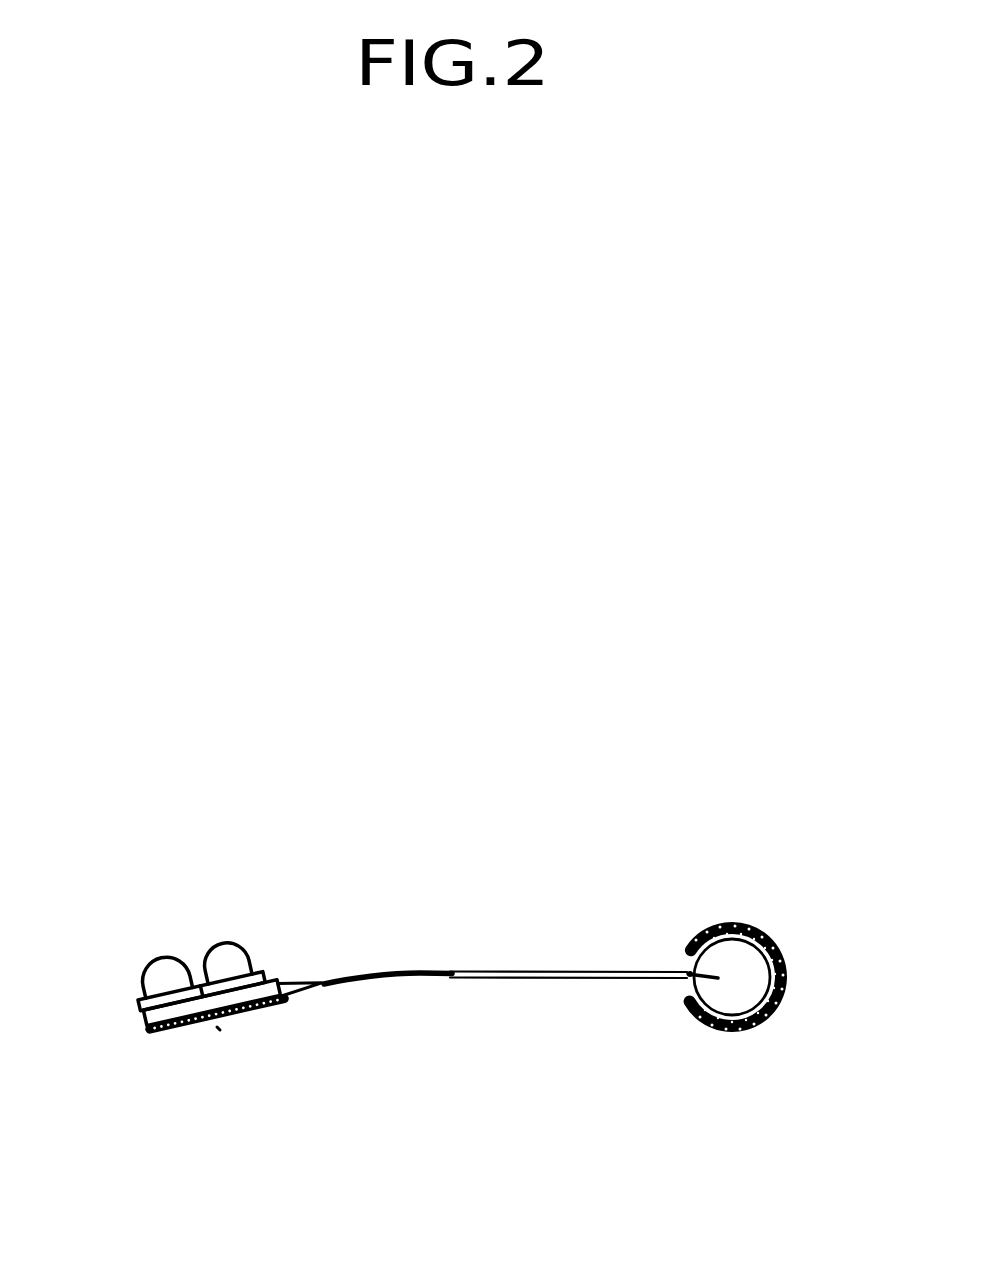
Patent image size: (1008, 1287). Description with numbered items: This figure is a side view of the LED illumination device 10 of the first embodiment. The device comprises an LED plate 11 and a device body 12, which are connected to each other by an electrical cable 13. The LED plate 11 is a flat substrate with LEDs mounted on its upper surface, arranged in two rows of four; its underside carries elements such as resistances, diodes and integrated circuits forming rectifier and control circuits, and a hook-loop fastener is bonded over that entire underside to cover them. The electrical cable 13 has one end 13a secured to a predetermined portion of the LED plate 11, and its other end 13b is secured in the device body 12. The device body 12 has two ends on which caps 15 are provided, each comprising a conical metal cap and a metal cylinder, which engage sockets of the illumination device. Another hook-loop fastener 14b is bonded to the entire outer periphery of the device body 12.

The LED illumination device 10 is at (448, 947).
The LED plate 11 is at (137, 1027).
The device body 12 is at (780, 945).
The electrical cable 13 is at (475, 980).
The end of the electrical cable 13a is at (313, 990).
The other end of the electrical cable 13b is at (687, 983).
The hook-loop fastener 14b is at (762, 1023).
The cap 15 is at (690, 973).